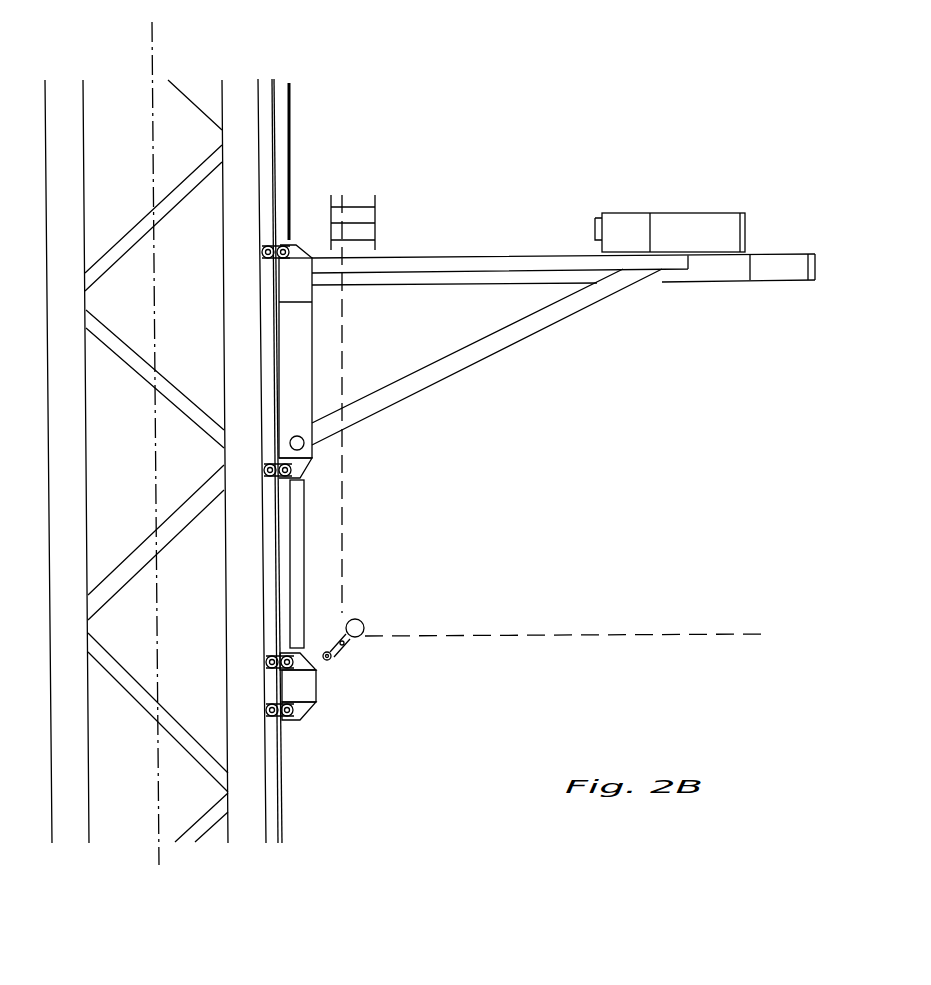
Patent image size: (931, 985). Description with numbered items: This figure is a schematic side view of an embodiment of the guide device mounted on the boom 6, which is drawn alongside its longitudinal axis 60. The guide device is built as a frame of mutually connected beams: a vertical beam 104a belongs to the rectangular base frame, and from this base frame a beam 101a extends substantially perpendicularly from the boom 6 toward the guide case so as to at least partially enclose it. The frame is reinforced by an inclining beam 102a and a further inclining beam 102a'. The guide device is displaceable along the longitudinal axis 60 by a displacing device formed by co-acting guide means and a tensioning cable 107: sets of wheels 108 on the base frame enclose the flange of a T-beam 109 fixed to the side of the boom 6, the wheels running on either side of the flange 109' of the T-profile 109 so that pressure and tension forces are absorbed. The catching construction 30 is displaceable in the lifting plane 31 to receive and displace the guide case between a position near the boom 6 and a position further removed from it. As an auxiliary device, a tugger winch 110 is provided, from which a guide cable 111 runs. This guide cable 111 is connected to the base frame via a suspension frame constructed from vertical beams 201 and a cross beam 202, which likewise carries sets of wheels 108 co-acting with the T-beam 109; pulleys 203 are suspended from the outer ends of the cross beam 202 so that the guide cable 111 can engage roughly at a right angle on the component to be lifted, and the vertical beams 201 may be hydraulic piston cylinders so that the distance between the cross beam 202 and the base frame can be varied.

The longitudinal axis 60 is at (150, 44).
The boom 6 is at (280, 73).
The tensioning cable 107 is at (290, 127).
The tugger winch 110 is at (353, 215).
The inclining beam 102a' is at (563, 231).
The catching construction 30 is at (650, 200).
The beam 101a is at (788, 260).
The set of wheels 108 is at (275, 253).
The vertical beam 104a is at (297, 340).
The inclining beam 102a is at (487, 357).
The lifting plane 31 is at (670, 475).
The guide cable 111 is at (345, 468).
The vertical beam 201 is at (300, 547).
The pulley 203 is at (362, 625).
The cross beam 202 is at (305, 688).
The T-beam 109 is at (319, 461).
The flange 109' is at (322, 461).